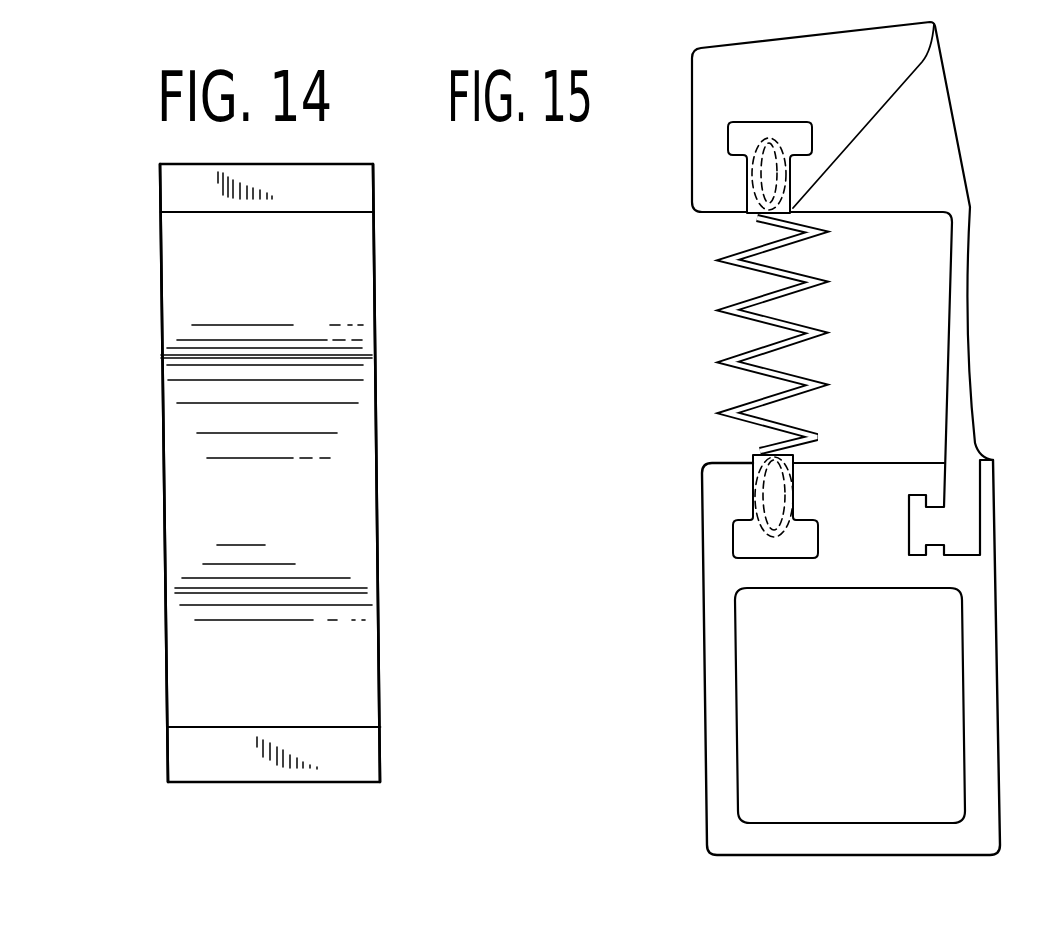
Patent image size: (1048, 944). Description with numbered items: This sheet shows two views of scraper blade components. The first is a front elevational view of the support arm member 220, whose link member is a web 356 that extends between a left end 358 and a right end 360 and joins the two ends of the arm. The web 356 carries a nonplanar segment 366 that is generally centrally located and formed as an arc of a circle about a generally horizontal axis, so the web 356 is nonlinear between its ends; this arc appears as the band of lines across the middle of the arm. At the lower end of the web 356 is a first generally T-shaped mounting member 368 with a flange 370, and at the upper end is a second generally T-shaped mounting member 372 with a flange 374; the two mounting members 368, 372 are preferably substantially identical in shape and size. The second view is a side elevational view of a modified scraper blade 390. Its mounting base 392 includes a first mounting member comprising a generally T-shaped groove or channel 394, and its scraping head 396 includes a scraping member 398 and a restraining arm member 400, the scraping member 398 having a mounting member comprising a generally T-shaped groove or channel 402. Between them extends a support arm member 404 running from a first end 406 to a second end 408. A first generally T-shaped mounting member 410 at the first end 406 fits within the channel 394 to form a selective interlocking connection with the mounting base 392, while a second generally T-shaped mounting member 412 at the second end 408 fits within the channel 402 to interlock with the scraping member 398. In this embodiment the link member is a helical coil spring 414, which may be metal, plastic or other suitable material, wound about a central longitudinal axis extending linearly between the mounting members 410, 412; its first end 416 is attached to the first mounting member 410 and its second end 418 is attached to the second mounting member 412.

In FIG. 14, the support arm member 220 is at (405, 365).
In FIG. 14, the web 356 is at (376, 594).
In FIG. 14, the left end 358 is at (165, 540).
In FIG. 14, the right end 360 is at (378, 545).
In FIG. 14, the nonplanar segment 366 is at (192, 425).
In FIG. 14, the first T-shaped mounting member 368 is at (389, 750).
In FIG. 14, the flange 370 is at (188, 755).
In FIG. 14, the second T-shaped mounting member 372 is at (382, 190).
In FIG. 14, the flange 374 is at (183, 185).
In FIG. 15, the scraper blade 390 is at (640, 223).
In FIG. 15, the mounting base 392 is at (700, 712).
In FIG. 15, the T-shaped groove or channel 394 is at (813, 540).
In FIG. 15, the scraping head 396 is at (968, 118).
In FIG. 15, the scraping member 398 is at (692, 70).
In FIG. 15, the restraining arm member 400 is at (966, 346).
In FIG. 15, the T-shaped groove or channel 402 is at (800, 120).
In FIG. 15, the support arm member 404 is at (727, 341).
In FIG. 15, the first end 406 is at (748, 540).
In FIG. 15, the second end 408 is at (735, 135).
In FIG. 15, the first T-shaped mounting member 410 is at (752, 505).
In FIG. 15, the second T-shaped mounting member 412 is at (748, 176).
In FIG. 15, the helical coil spring 414 is at (789, 318).
In FIG. 15, the first end 416 is at (790, 497).
In FIG. 15, the second end 418 is at (786, 176).